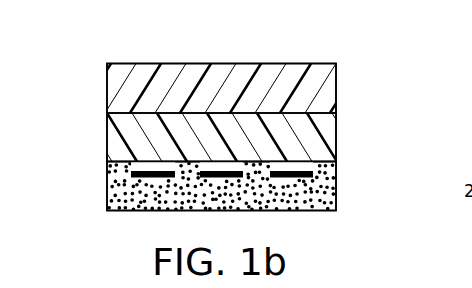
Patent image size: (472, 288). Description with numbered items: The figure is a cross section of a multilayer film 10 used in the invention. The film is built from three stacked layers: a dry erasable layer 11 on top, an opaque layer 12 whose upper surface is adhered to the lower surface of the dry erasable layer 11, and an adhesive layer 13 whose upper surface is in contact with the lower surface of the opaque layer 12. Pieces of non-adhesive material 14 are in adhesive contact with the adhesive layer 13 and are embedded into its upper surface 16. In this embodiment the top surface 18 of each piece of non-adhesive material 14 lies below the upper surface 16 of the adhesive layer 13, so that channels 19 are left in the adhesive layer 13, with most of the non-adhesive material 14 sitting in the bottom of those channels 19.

The multilayer film 10 is at (136, 47).
The dry erasable layer 11 is at (338, 82).
The opaque layer 12 is at (338, 135).
The adhesive layer 13 is at (338, 188).
The non-adhesive material 14 is at (167, 178).
The upper surface of adhesive layer 16 is at (117, 162).
The top surface of non-adhesive material 18 is at (121, 162).
The channels 19 is at (301, 163).